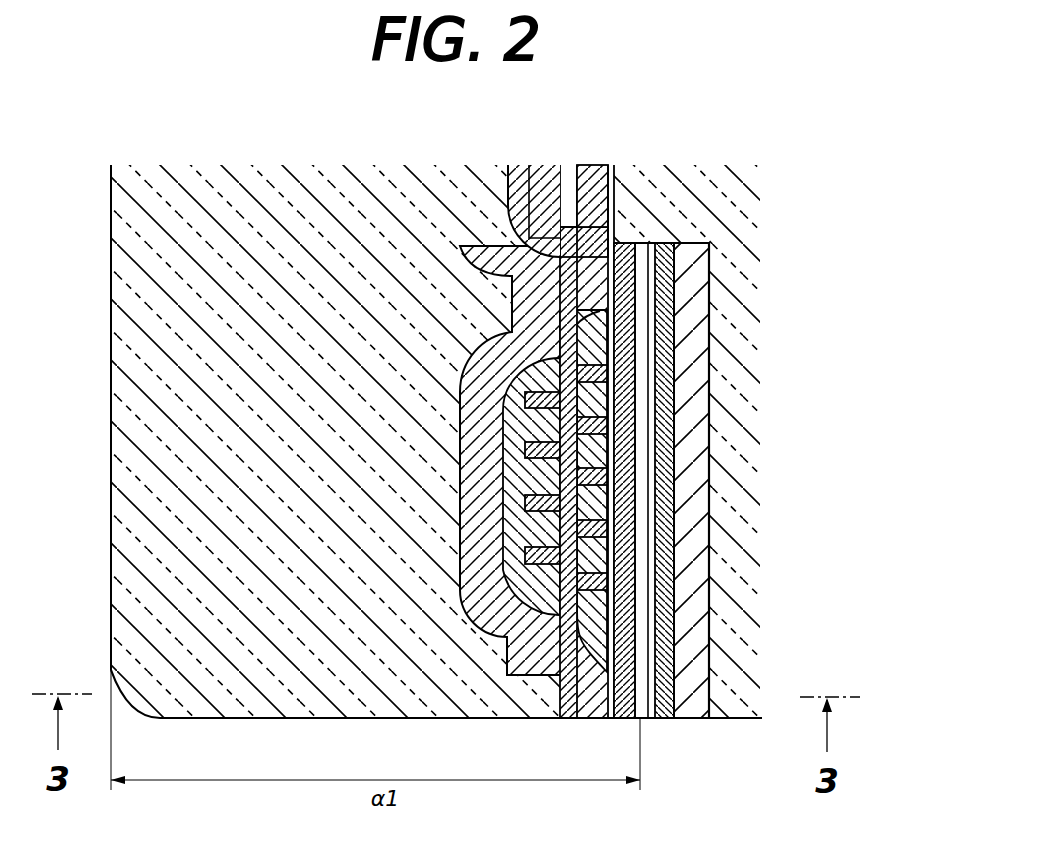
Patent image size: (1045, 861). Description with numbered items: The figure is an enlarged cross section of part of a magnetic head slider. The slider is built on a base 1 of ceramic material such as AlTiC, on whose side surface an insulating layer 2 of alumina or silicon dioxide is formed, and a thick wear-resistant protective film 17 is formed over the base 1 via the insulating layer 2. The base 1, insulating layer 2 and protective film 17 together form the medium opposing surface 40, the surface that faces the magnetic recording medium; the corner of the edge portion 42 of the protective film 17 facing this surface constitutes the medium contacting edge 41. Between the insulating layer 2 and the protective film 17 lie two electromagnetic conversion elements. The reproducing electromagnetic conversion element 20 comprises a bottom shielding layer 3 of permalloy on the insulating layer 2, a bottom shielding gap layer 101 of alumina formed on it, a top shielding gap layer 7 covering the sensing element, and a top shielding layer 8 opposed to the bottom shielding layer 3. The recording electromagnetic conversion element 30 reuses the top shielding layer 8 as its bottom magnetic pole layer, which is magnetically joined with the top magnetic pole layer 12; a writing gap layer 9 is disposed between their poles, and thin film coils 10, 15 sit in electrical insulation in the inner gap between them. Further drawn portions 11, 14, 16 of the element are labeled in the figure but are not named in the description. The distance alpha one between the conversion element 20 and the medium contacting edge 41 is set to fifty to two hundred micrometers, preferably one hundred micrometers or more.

The base 1 is at (737, 206).
The insulating layer 2 is at (696, 366).
The bottom shielding layer 3 is at (675, 308).
The top shielding gap layer 7 is at (642, 268).
The top shielding layer 8 is at (630, 540).
The writing gap layer 9 is at (612, 505).
The thin film coil 10 is at (600, 478).
The filler 11 is at (637, 433).
The top magnetic pole layer 12 is at (385, 395).
The coating layer 14 is at (575, 598).
The thin film coil 15 is at (464, 385).
The cap portion 16 is at (447, 400).
The protective film 17 is at (236, 198).
The electromagnetic conversion element 20 is at (640, 722).
The electromagnetic conversion element 30 is at (549, 684).
The medium opposing surface 40 is at (716, 723).
The medium contacting edge 41 is at (137, 712).
The edge portion 42 is at (111, 402).
The bottom shielding gap layer 101 is at (575, 612).